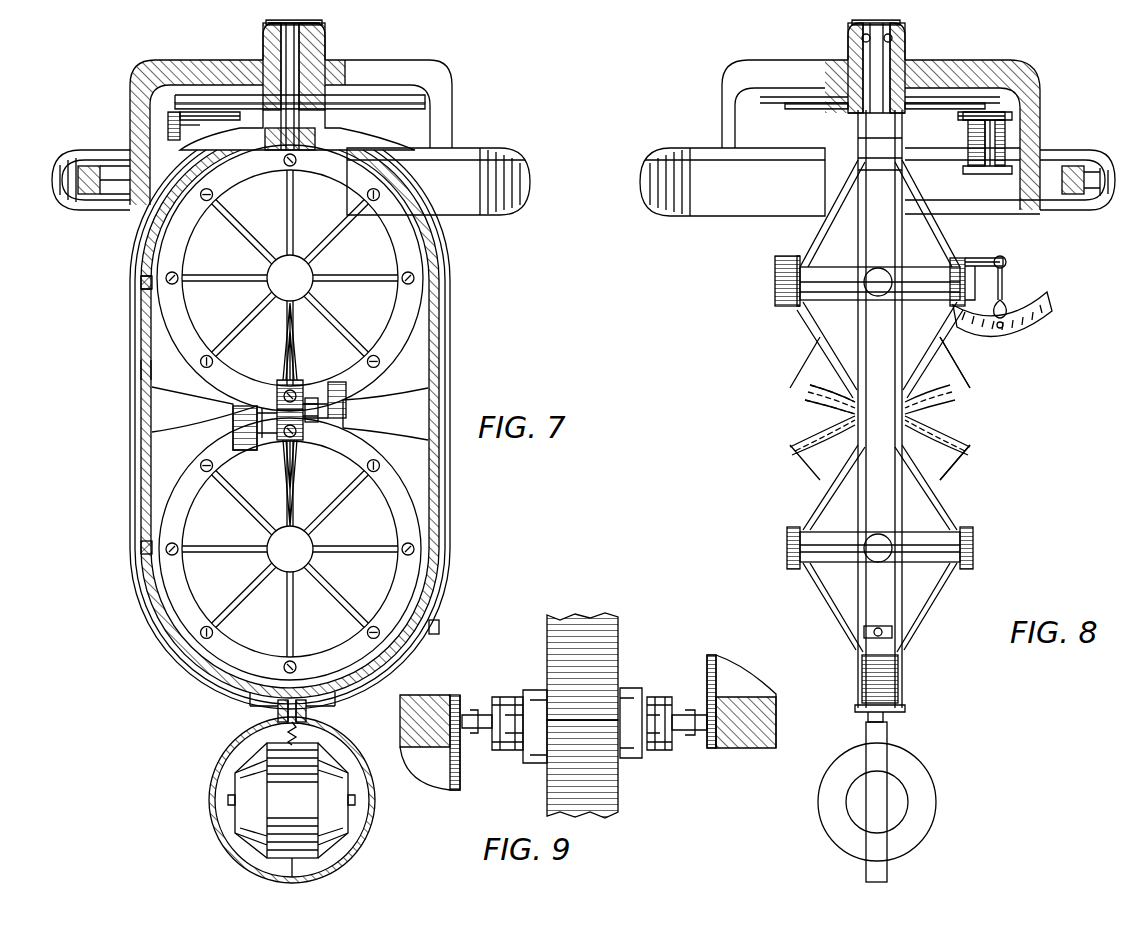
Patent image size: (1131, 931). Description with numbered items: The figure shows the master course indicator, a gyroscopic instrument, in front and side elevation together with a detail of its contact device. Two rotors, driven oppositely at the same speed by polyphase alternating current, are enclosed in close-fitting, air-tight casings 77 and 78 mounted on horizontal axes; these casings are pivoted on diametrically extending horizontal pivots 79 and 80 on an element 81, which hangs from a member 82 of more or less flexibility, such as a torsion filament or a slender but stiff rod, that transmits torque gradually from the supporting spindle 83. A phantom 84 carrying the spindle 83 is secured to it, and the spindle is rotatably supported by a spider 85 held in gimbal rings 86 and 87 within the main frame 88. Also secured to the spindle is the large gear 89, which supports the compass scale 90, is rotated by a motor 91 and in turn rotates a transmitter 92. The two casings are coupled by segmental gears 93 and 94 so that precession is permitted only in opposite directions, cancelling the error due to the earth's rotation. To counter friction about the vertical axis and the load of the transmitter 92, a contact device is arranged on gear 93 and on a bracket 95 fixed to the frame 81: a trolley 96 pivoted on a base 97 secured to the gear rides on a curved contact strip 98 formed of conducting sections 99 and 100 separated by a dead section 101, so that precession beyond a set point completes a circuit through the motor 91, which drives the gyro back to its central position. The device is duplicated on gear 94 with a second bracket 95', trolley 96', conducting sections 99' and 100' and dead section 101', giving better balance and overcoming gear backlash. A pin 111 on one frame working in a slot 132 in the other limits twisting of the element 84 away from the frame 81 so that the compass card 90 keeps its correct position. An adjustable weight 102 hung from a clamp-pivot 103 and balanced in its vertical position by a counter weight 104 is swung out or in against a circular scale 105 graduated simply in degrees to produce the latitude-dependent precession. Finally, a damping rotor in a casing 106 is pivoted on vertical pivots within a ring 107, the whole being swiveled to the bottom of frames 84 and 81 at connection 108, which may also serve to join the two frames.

In FIG. 7, the rotor casing 77 is at (290, 278).
In FIG. 8, the rotor casing 77 is at (880, 279).
In FIG. 7, the rotor casing 78 is at (290, 549).
In FIG. 8, the rotor casing 78 is at (880, 548).
In FIG. 7, the horizontal pivot 79 is at (168, 283).
In FIG. 7, the horizontal pivot 80 is at (152, 547).
In FIG. 7, the element (frame) 81 is at (150, 367).
In FIG. 7, the suspension member 82 is at (292, 118).
In FIG. 8, the suspension member 82 is at (903, 42).
In FIG. 7, the supporting spindle 83 is at (322, 42).
In FIG. 7, the phantom 84 is at (452, 383).
In FIG. 8, the phantom 84 is at (880, 416).
In FIG. 7, the spider 85 is at (130, 88).
In FIG. 8, the spider 85 is at (881, 135).
In FIG. 7, the gimbal ring 86 is at (108, 199).
In FIG. 8, the gimbal ring 87 is at (1088, 197).
In FIG. 7, the main frame 88 is at (438, 181).
In FIG. 8, the main frame 88 is at (732, 182).
In FIG. 7, the large gear 89 is at (208, 104).
In FIG. 8, the large gear 89 is at (958, 110).
In FIG. 7, the compass scale (compass card) 90 is at (412, 98).
In FIG. 8, the compass scale (compass card) 90 is at (772, 100).
In FIG. 8, the motor 91 is at (970, 130).
In FIG. 7, the transmitter 92 is at (186, 128).
In FIG. 7, the segmental gear 93 is at (300, 382).
In FIG. 8, the segmental gear 93 is at (953, 390).
In FIG. 9, the segmental gear 93 is at (618, 628).
In FIG. 7, the segmental gear 94 is at (303, 442).
In FIG. 8, the segmental gear 94 is at (957, 442).
In FIG. 9, the segmental gear 94 is at (618, 793).
In FIG. 7, the bracket 95 is at (365, 411).
In FIG. 9, the bracket 95 is at (746, 701).
In FIG. 7, the bracket 95' is at (214, 418).
In FIG. 9, the bracket 95' is at (430, 728).
In FIG. 7, the trolley 96 is at (319, 401).
In FIG. 9, the trolley 96 is at (689, 711).
In FIG. 9, the trolley 96' is at (504, 721).
In FIG. 9, the base 97 is at (643, 708).
In FIG. 9, the curved contact strip 98 is at (705, 685).
In FIG. 8, the conducting section 99 is at (822, 408).
In FIG. 8, the conducting section 99' is at (816, 433).
In FIG. 8, the conducting section 100 is at (937, 408).
In FIG. 8, the conducting section 100' is at (952, 432).
In FIG. 9, the dead section 101 is at (704, 718).
In FIG. 9, the dead section 101' is at (479, 742).
In FIG. 8, the adjustable weight (bob) 102 is at (1007, 303).
In FIG. 8, the clamp-pivot 103 is at (1018, 253).
In FIG. 8, the counter weight 104 is at (775, 285).
In FIG. 8, the circular scale 105 is at (1023, 326).
In FIG. 7, the damping rotor casing 106 is at (291, 799).
In FIG. 8, the damping rotor casing 106 is at (930, 808).
In FIG. 7, the ring 107 is at (372, 828).
In FIG. 8, the ring 107 is at (880, 734).
In FIG. 7, the swivel connection 108 is at (307, 715).
In FIG. 7, the pin 111 is at (418, 628).
In FIG. 8, the pin 111 is at (878, 628).
In FIG. 8, the slot 132 is at (883, 641).